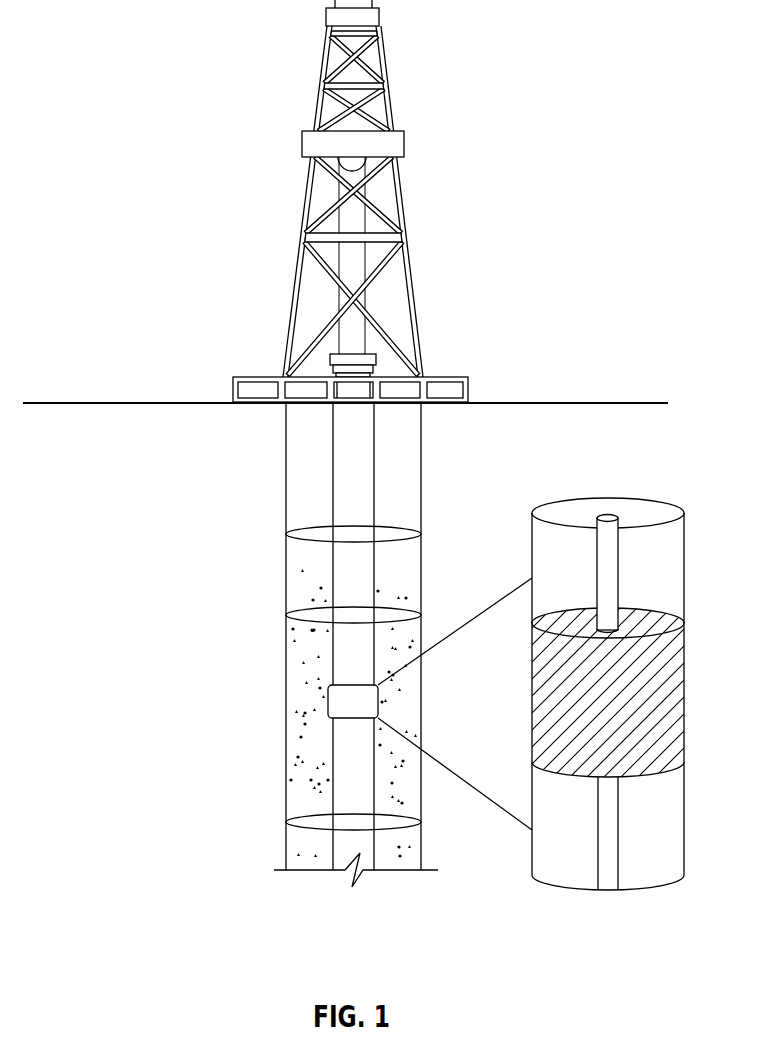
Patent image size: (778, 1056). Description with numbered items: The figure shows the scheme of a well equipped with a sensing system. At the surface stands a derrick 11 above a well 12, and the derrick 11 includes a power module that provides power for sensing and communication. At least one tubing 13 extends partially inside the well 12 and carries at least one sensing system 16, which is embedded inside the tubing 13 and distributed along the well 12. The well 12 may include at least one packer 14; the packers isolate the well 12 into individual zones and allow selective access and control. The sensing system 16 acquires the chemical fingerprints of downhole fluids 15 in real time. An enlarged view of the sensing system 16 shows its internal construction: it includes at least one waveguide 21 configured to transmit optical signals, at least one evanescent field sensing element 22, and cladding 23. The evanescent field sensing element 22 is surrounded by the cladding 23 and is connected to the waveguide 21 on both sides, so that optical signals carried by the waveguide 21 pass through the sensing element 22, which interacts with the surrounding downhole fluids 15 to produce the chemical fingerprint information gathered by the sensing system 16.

The derrick 11 is at (404, 144).
The well 12 is at (286, 752).
The tubing 13 is at (348, 591).
The packer 14 is at (312, 534).
The downhole fluids 15 is at (300, 855).
The sensing system 16 is at (348, 705).
The waveguide 21 is at (608, 520).
The evanescent field sensing element 22 is at (670, 700).
The cladding 23 is at (669, 565).